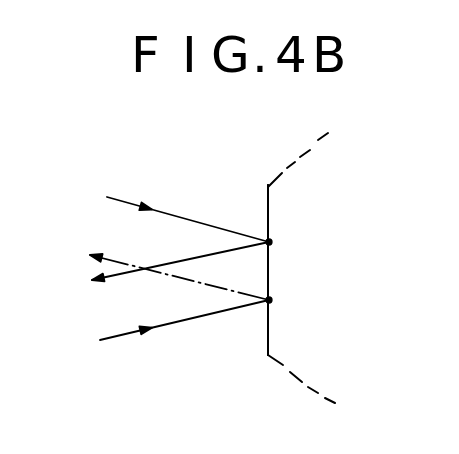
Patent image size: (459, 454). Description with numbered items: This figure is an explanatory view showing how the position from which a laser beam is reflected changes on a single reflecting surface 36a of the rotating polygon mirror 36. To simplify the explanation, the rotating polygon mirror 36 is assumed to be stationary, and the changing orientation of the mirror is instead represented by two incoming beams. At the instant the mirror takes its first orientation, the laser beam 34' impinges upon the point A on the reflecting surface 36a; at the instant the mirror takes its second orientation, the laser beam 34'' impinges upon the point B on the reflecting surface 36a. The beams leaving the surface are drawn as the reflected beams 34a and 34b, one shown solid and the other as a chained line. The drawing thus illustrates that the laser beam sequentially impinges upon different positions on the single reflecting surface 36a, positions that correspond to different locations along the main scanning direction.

The laser beam 34' is at (188, 197).
The laser beam 34'' is at (184, 343).
The reflected light beam 34a is at (168, 266).
The reflected light beam 34b is at (168, 275).
The rotating polygon mirror 36 is at (397, 268).
The reflecting surface 36a is at (268, 325).
The point A is at (270, 241).
The point B is at (270, 300).